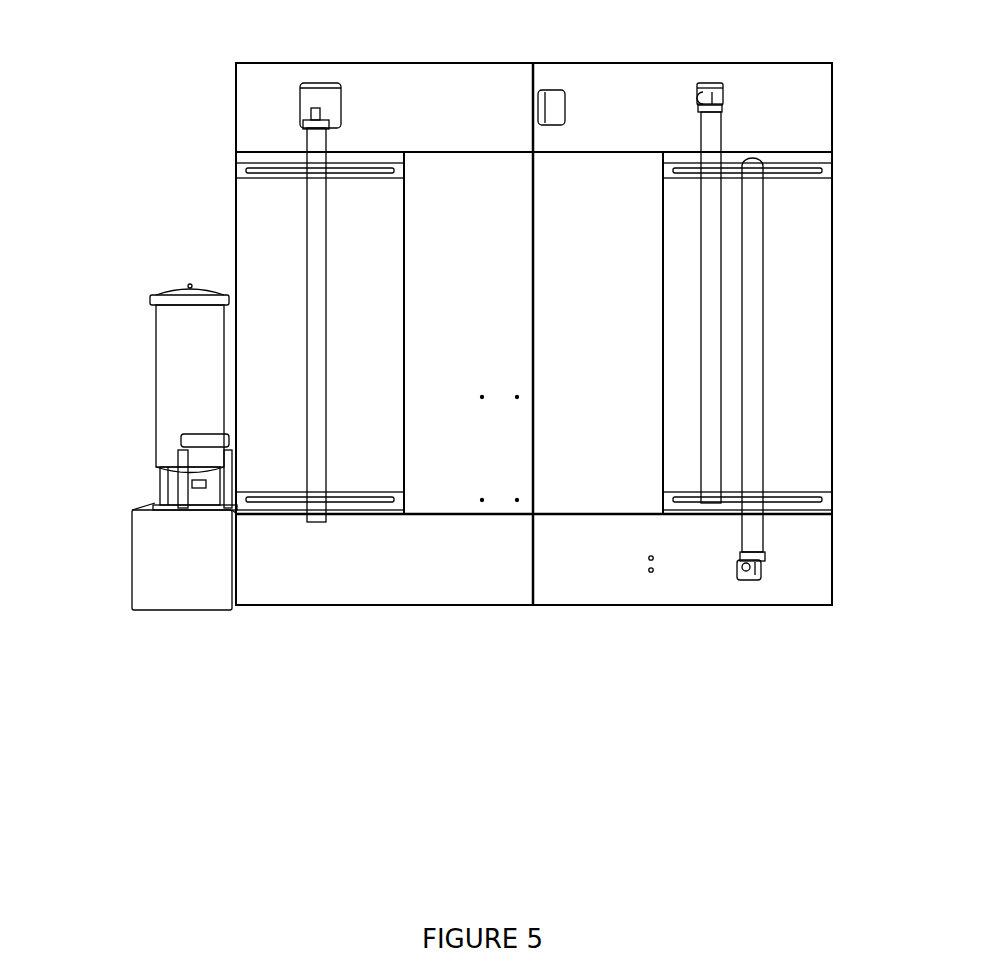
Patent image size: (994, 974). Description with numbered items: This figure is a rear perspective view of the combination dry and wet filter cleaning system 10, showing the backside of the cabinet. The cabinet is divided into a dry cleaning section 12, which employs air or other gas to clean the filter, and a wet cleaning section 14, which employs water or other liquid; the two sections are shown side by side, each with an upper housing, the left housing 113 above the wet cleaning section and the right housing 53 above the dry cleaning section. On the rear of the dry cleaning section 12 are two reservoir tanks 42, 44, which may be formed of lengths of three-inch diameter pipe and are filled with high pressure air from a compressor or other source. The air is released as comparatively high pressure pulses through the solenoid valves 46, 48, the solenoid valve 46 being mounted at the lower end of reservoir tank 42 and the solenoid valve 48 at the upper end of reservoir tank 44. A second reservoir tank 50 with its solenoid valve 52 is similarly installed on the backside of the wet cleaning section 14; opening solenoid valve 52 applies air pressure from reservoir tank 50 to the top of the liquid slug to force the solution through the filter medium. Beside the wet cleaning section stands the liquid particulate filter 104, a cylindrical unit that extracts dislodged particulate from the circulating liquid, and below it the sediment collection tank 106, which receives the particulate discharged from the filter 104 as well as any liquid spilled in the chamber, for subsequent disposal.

The filter cleaning system 10 is at (113, 63).
The dry cleaning section 12 is at (828, 195).
The wet cleaning section 14 is at (232, 195).
The left upper housing 113 is at (281, 135).
The right upper housing 53 is at (760, 125).
The solenoid valve 52 is at (303, 87).
The second reservoir tank 50 is at (320, 318).
The solenoid valve 48 is at (697, 80).
The reservoir tank 44 is at (695, 320).
The reservoir tank 42 is at (755, 338).
The solenoid valve 46 is at (752, 572).
The liquid particulate filter 104 is at (155, 383).
The sediment collection tank 106 is at (128, 565).